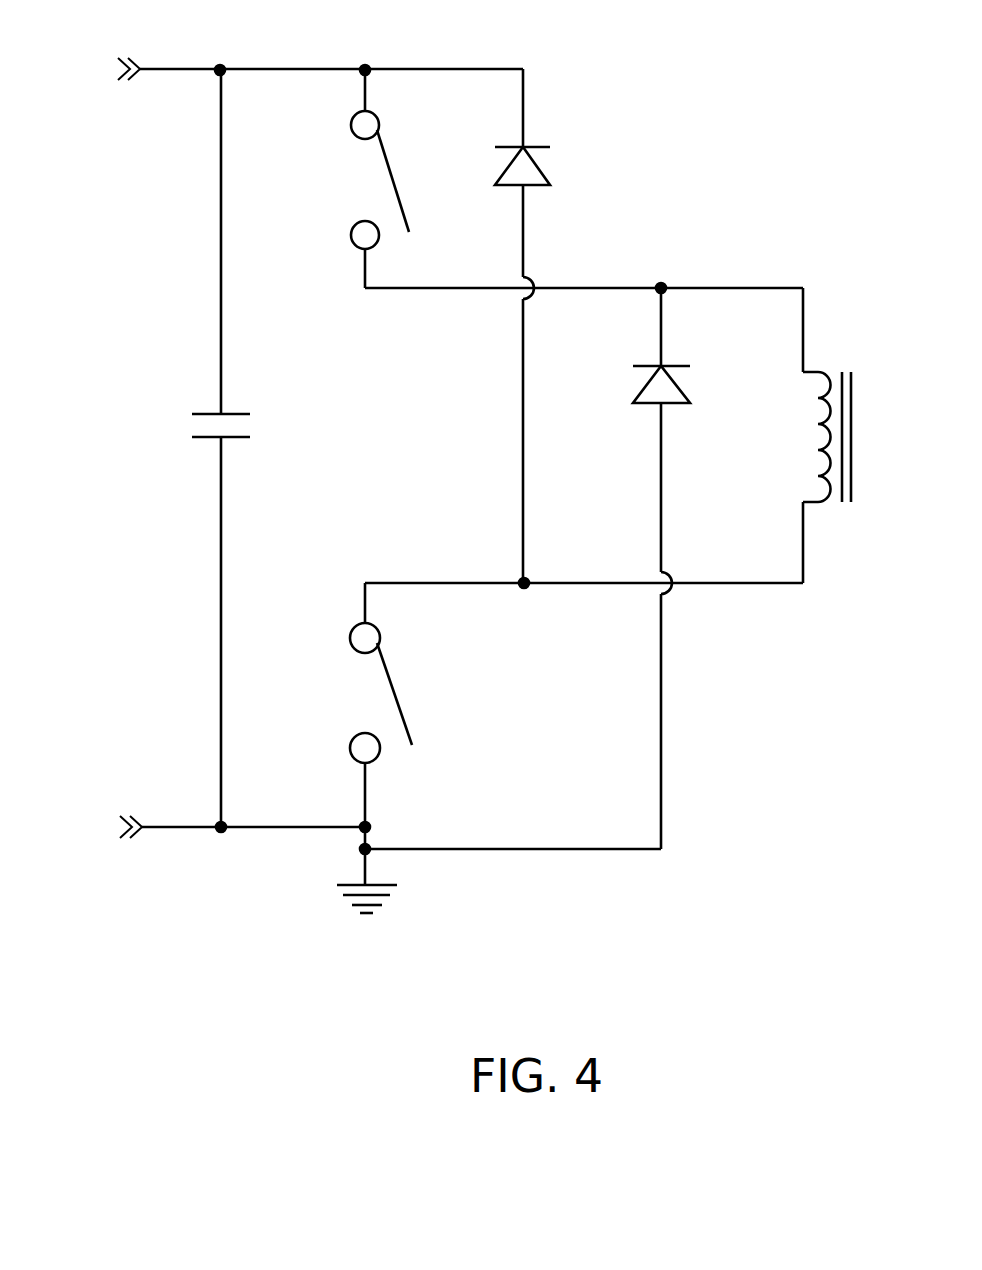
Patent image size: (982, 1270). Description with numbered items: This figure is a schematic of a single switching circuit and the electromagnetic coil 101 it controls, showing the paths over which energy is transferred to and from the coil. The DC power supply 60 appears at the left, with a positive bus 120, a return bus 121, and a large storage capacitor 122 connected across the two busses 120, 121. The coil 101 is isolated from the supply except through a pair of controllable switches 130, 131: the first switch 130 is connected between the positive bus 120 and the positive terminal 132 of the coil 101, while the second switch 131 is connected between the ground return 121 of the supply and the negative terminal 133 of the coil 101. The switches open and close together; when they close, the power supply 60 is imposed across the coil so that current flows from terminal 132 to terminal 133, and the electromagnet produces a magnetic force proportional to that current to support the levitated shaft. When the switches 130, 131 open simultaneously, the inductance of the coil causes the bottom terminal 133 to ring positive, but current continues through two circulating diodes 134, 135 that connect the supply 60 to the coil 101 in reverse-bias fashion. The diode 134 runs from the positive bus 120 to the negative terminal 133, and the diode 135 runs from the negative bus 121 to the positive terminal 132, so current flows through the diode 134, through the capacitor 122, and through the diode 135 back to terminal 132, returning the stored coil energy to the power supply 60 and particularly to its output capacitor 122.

The DC power supply 60 is at (95, 495).
The coil 101 is at (822, 444).
The positive bus 120 is at (173, 71).
The return bus 121 is at (173, 830).
The storage capacitor 122 is at (228, 440).
The first switch 130 is at (393, 177).
The second switch 131 is at (400, 704).
The positive terminal of coil 132 is at (807, 328).
The negative terminal of coil 133 is at (806, 553).
The circulating diode 134 is at (544, 175).
The circulating diode 135 is at (678, 406).